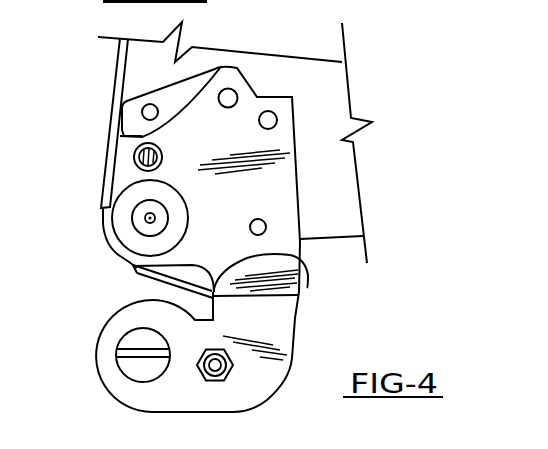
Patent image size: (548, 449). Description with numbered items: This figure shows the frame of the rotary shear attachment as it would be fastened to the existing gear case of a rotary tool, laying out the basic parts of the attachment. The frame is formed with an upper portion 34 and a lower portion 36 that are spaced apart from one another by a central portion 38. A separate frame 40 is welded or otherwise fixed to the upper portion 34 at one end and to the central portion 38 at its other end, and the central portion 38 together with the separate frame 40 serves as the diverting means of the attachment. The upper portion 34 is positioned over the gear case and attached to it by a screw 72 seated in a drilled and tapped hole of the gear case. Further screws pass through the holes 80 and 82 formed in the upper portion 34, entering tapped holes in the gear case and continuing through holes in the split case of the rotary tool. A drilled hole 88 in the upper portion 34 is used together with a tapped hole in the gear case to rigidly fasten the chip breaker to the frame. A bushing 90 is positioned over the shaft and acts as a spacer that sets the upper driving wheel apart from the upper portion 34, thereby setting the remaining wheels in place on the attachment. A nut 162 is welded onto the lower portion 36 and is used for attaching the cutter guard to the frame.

The upper portion 34 is at (230, 146).
The lower portion 36 is at (280, 327).
The central portion 38 is at (307, 287).
The separate frame 40 is at (148, 274).
The screw 72 is at (134, 158).
The hole 80 is at (231, 89).
The hole 82 is at (295, 78).
The drilled hole 88 is at (266, 225).
The bushing 90 is at (128, 230).
The nut 162 is at (233, 367).